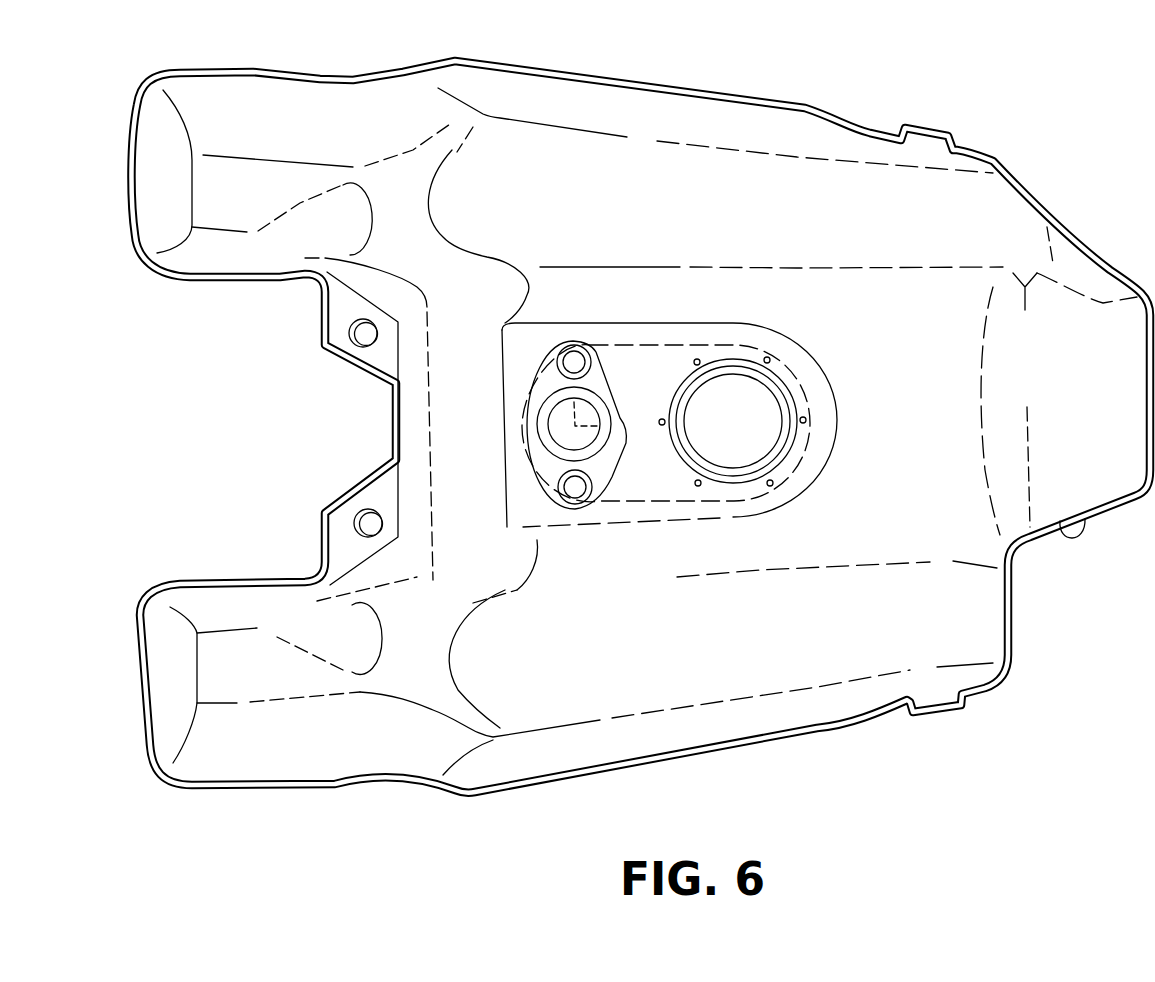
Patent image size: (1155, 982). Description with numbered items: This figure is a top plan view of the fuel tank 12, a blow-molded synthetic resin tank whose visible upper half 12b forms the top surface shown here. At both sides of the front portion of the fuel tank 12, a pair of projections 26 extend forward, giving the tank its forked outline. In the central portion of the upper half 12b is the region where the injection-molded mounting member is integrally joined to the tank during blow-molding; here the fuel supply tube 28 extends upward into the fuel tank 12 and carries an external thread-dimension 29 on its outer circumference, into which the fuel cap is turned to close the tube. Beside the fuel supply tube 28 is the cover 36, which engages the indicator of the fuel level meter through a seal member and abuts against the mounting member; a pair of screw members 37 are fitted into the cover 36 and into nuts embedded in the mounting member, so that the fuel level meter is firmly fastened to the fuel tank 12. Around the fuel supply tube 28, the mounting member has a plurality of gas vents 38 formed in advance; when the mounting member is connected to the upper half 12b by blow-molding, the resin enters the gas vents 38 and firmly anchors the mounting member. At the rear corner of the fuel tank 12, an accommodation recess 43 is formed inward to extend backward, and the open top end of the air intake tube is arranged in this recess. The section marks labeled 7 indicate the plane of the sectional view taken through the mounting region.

The fuel tank 12 is at (818, 100).
The upper half 12b is at (707, 158).
The projections 26 is at (200, 253).
The fuel supply tube 28 is at (782, 458).
The external thread-dimension 29 is at (783, 380).
The cover 36 is at (603, 460).
The screw members 37 is at (574, 362).
The gas vents 38 is at (770, 486).
The accommodation recess 43 is at (1062, 530).
The section line 7- 7 is at (585, 290).